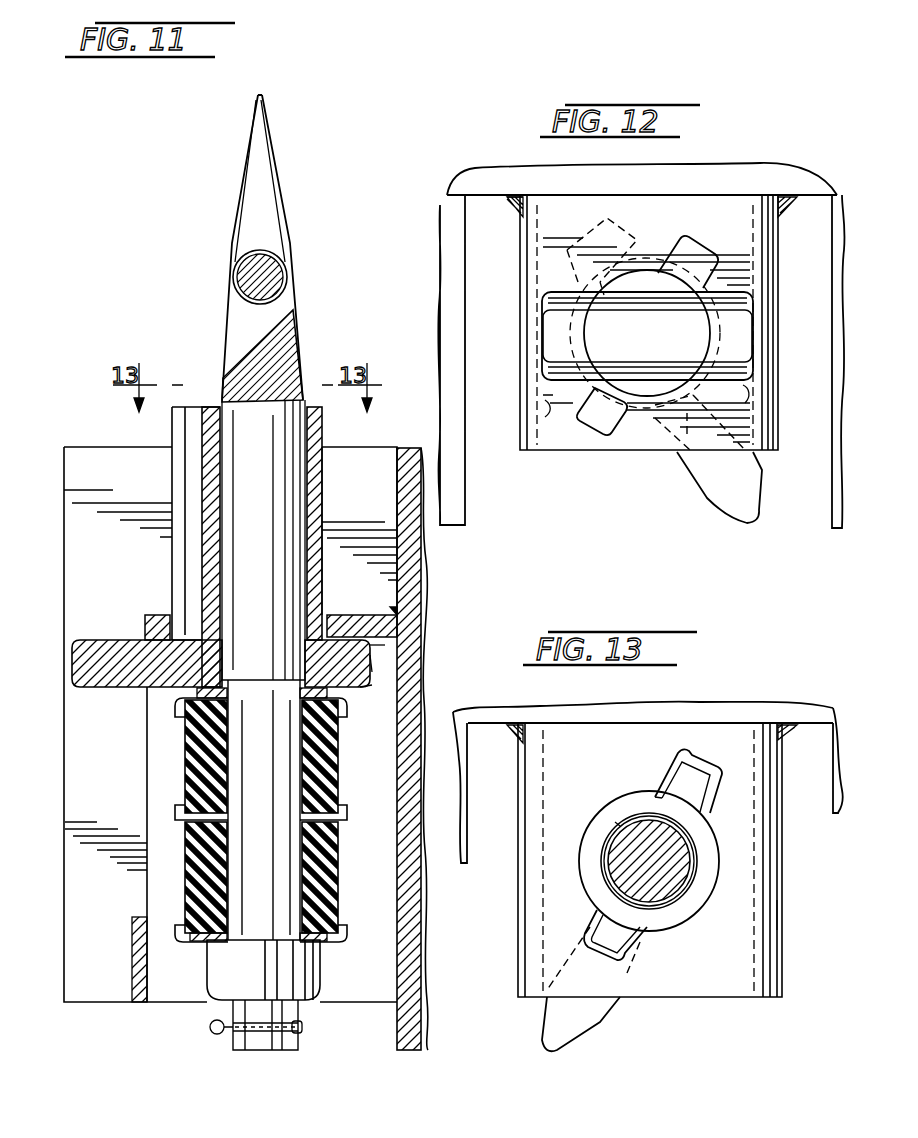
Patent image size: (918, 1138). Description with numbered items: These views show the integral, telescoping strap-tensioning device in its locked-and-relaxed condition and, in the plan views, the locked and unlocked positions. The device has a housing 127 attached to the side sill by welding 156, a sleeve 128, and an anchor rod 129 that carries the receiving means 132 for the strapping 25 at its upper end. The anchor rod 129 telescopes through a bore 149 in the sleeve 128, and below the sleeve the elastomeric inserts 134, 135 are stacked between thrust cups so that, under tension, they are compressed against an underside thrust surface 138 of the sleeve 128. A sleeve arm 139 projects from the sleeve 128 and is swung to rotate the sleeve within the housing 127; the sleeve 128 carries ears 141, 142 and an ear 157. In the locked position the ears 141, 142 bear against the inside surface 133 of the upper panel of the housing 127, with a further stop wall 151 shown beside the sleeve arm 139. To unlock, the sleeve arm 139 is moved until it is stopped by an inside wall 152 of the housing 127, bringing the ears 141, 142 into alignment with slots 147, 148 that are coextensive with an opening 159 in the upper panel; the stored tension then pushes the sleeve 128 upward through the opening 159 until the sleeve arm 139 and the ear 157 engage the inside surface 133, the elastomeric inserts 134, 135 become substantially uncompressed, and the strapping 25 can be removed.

In FIG. 11, the strapping 25 is at (273, 158).
In FIG. 11, the housing 127 is at (383, 986).
In FIG. 13, the housing 127 is at (750, 965).
In FIG. 11, the sleeve 128 is at (313, 507).
In FIG. 13, the sleeve 128 is at (660, 913).
In FIG. 11, the anchor rod 129 is at (280, 856).
In FIG. 13, the anchor rod 129 is at (682, 855).
In FIG. 11, the receiving means 132 is at (268, 272).
In FIG. 12, the receiving means 132 is at (740, 303).
In FIG. 11, the inside surface 133 is at (385, 645).
In FIG. 11, the elastomeric insert 134 is at (185, 745).
In FIG. 11, the elastomeric insert 135 is at (185, 880).
In FIG. 11, the underside thrust surface 138 is at (368, 698).
In FIG. 11, the sleeve arm 139 is at (80, 660).
In FIG. 12, the sleeve arm 139 is at (743, 485).
In FIG. 13, the sleeve arm 139 is at (563, 1033).
In FIG. 11, the ear 141 is at (172, 430).
In FIG. 12, the ear 141 is at (680, 458).
In FIG. 13, the ear 141 is at (618, 935).
In FIG. 12, the ear 142 is at (602, 195).
In FIG. 13, the ear 142 is at (683, 783).
In FIG. 11, the slot 147 is at (168, 622).
In FIG. 12, the slot 147 is at (602, 415).
In FIG. 13, the slot 147 is at (610, 957).
In FIG. 12, the slot 148 is at (697, 255).
In FIG. 13, the slot 148 is at (695, 754).
In FIG. 11, the bore 149 is at (310, 443).
In FIG. 13, the bore 149 is at (620, 825).
In FIG. 12, the right guide slot 151 is at (752, 398).
In FIG. 12, the inside wall 152 is at (540, 418).
In FIG. 12, the welding 156 is at (510, 203).
In FIG. 11, the ear 157 is at (370, 662).
In FIG. 11, the opening 159 is at (318, 620).
In FIG. 13, the opening 159 is at (723, 887).